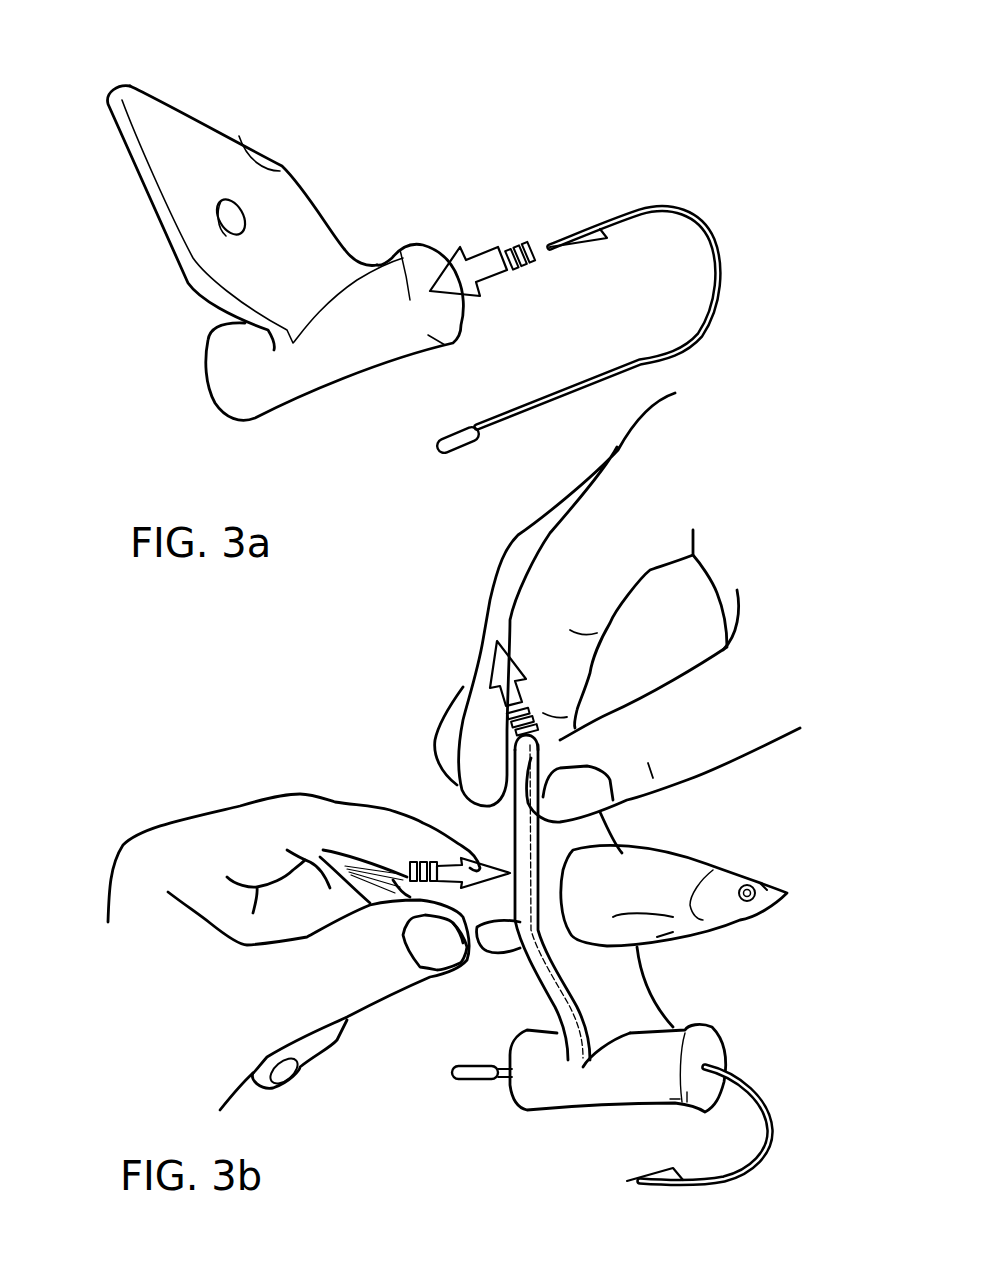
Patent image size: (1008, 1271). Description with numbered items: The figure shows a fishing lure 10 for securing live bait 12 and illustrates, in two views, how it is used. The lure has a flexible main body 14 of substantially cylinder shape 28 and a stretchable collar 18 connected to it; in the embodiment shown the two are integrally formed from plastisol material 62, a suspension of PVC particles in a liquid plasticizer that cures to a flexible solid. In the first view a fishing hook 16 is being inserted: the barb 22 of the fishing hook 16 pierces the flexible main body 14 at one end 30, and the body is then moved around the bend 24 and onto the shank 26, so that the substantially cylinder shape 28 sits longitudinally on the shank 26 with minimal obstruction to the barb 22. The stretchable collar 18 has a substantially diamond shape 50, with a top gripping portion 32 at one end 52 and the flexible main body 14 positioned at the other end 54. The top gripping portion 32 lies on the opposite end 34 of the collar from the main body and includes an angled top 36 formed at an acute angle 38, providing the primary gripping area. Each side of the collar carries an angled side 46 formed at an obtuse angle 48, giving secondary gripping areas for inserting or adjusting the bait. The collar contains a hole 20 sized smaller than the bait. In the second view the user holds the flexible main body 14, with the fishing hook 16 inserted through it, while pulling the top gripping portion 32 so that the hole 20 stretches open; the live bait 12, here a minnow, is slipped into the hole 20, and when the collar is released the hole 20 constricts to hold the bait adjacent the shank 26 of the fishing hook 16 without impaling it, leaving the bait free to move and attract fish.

In FIG. 3a, the fishing lure 10 is at (178, 70).
In FIG. 3b, the fishing lure 10 is at (803, 780).
In FIG. 3b, the live bait 12 is at (700, 858).
In FIG. 3a, the flexible main body 14 is at (240, 400).
In FIG. 3b, the flexible main body 14 is at (590, 1093).
In FIG. 3a, the fishing hook 16 is at (600, 307).
In FIG. 3b, the fishing hook 16 is at (646, 1112).
In FIG. 3a, the stretchable collar 18 is at (145, 200).
In FIG. 3b, the stretchable collar 18 is at (497, 823).
In FIG. 3a, the hole 20 is at (243, 230).
In FIG. 3b, the hole 20 is at (573, 946).
In FIG. 3a, the barb 22 is at (580, 253).
In FIG. 3b, the barb 22 is at (648, 1164).
In FIG. 3a, the bend 24 is at (693, 268).
In FIG. 3b, the bend 24 is at (776, 1153).
In FIG. 3a, the shank 26 is at (578, 381).
In FIG. 3b, the shank 26 is at (675, 1022).
In FIG. 3a, the substantially cylinder shape 28 is at (342, 396).
In FIG. 3b, the substantially cylinder shape 28 is at (515, 1112).
In FIG. 3a, the end 30 is at (440, 250).
In FIG. 3b, the end 30 is at (723, 1030).
In FIG. 3a, the top gripping portion 32 is at (188, 103).
In FIG. 3b, the top gripping portion 32 is at (618, 822).
In FIG. 3a, the opposite end 34 is at (348, 242).
In FIG. 3b, the opposite end 34 is at (548, 1024).
In FIG. 3a, the angled top 36 is at (112, 100).
In FIG. 3a, the acute angle 38 is at (157, 102).
In FIG. 3a, the angled side 46 is at (256, 150).
In FIG. 3a, the obtuse angle 48 is at (278, 171).
In FIG. 3a, the substantially diamond shape 50 is at (242, 110).
In FIG. 3a, the one end 52 is at (127, 82).
In FIG. 3a, the other end 54 is at (333, 235).
In FIG. 3a, the plastisol material 62 is at (165, 228).
In FIG. 3b, the plastisol material 62 is at (670, 1100).